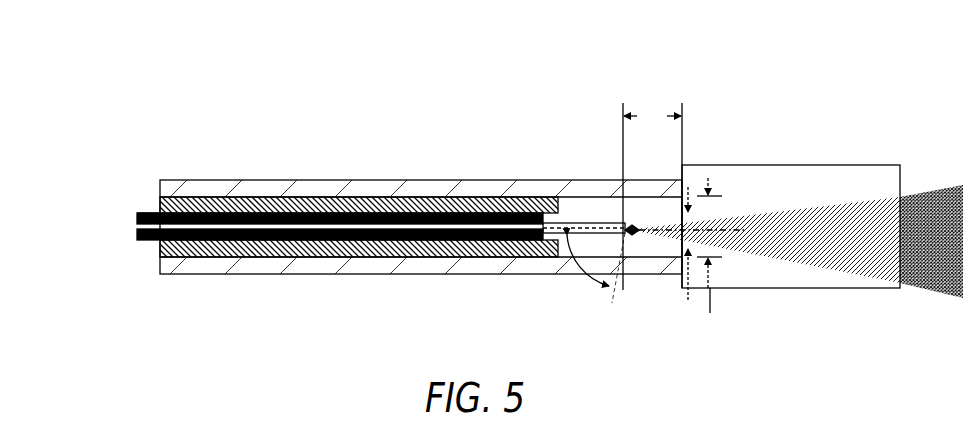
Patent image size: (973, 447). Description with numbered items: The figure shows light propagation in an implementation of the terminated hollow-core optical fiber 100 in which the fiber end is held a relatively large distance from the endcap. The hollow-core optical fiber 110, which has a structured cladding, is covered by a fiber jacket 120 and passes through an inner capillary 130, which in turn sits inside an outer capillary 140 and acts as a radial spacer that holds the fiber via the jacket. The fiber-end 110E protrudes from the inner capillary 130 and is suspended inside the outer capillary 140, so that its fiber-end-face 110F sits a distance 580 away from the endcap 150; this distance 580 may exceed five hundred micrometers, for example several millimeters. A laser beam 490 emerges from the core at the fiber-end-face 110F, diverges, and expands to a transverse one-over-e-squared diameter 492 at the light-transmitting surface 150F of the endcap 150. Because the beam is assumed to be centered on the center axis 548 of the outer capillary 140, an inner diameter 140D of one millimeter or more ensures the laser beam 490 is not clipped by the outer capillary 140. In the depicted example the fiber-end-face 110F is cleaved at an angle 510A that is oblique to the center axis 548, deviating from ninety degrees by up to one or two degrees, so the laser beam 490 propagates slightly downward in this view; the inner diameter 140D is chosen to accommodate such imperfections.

The terminated hollow-core optical fiber 100 is at (130, 78).
The hollow-core optical fiber 110 is at (137, 227).
The fiber jacket 120 is at (148, 213).
The inner capillary 130 is at (412, 250).
The outer capillary 140 is at (462, 180).
The fiber-end 110E is at (607, 222).
The fiber-end-face 110F is at (634, 233).
The angle 510A is at (567, 242).
The distance 580 is at (652, 196).
The endcap 150 is at (805, 190).
The laser beam 490 is at (867, 246).
The 1/e^2 diameter 492 is at (691, 251).
The center axis 548 is at (723, 214).
The inner diameter 140D is at (711, 312).
The light-transmitting surface 150F is at (679, 248).